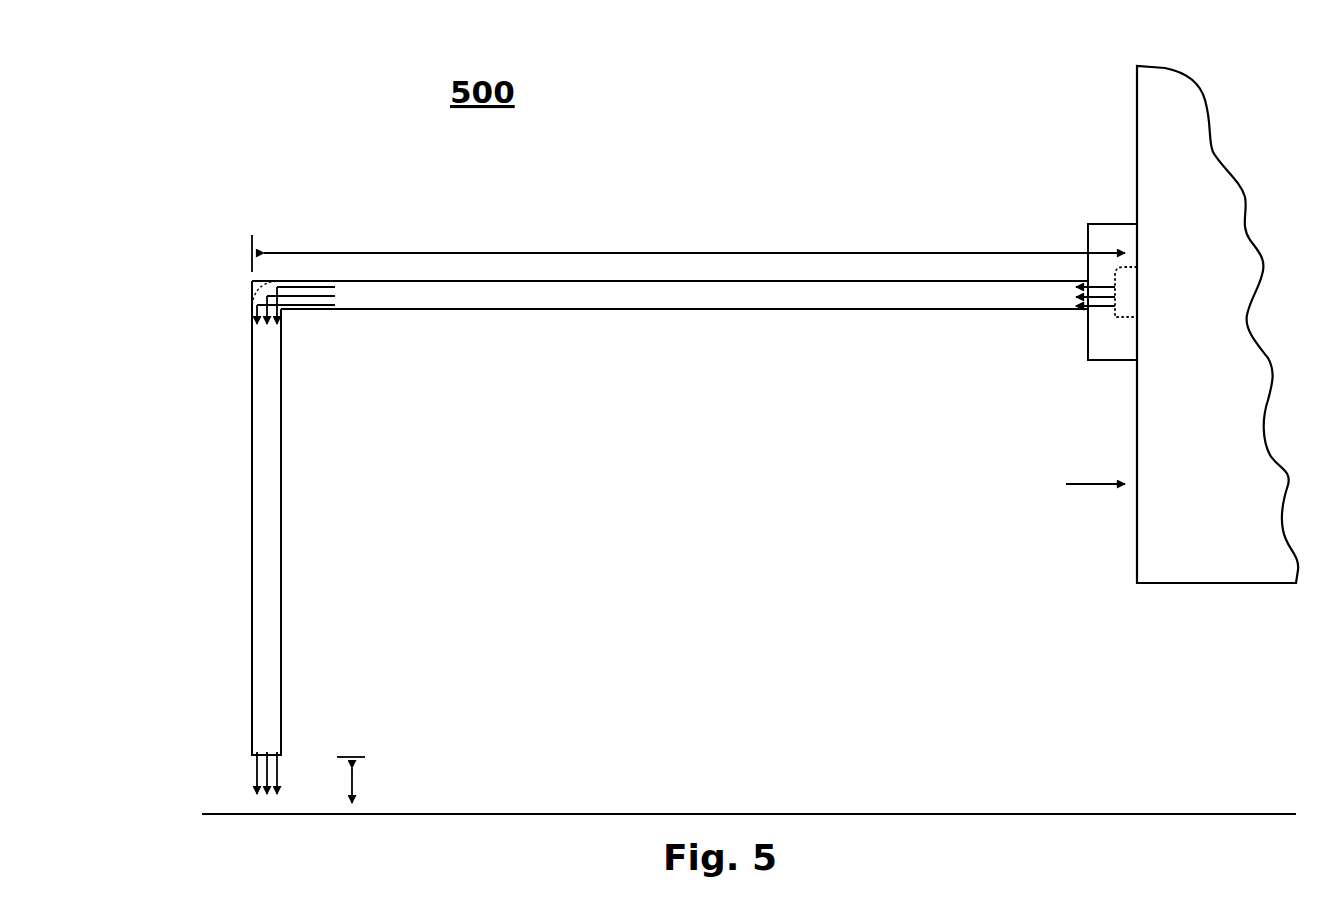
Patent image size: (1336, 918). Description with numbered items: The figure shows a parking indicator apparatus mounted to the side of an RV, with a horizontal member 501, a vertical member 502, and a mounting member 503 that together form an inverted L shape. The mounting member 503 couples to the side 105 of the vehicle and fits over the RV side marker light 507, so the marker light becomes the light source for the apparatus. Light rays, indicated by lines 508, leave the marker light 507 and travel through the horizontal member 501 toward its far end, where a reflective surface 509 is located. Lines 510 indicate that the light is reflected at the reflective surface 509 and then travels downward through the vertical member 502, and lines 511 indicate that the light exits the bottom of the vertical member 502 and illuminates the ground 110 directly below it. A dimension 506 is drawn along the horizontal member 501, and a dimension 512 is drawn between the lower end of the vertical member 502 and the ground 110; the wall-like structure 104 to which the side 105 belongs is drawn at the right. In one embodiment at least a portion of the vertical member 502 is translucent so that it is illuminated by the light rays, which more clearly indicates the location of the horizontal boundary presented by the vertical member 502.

The wall / structure 104 is at (1185, 118).
The side 105 is at (1079, 483).
The ground 110 is at (557, 813).
The horizontal member 501 is at (562, 297).
The vertical member 502 is at (268, 510).
The mounting member 503 is at (1107, 367).
The conduit length 506 is at (718, 255).
The RV side marker light 507 is at (1128, 290).
The lines indicating light rays 508 is at (1097, 302).
The reflective surface 509 is at (262, 297).
The lines indicating reflected light 510 is at (303, 299).
The lines indicating light illuminating ground 511 is at (262, 778).
The gap height 512 is at (353, 783).